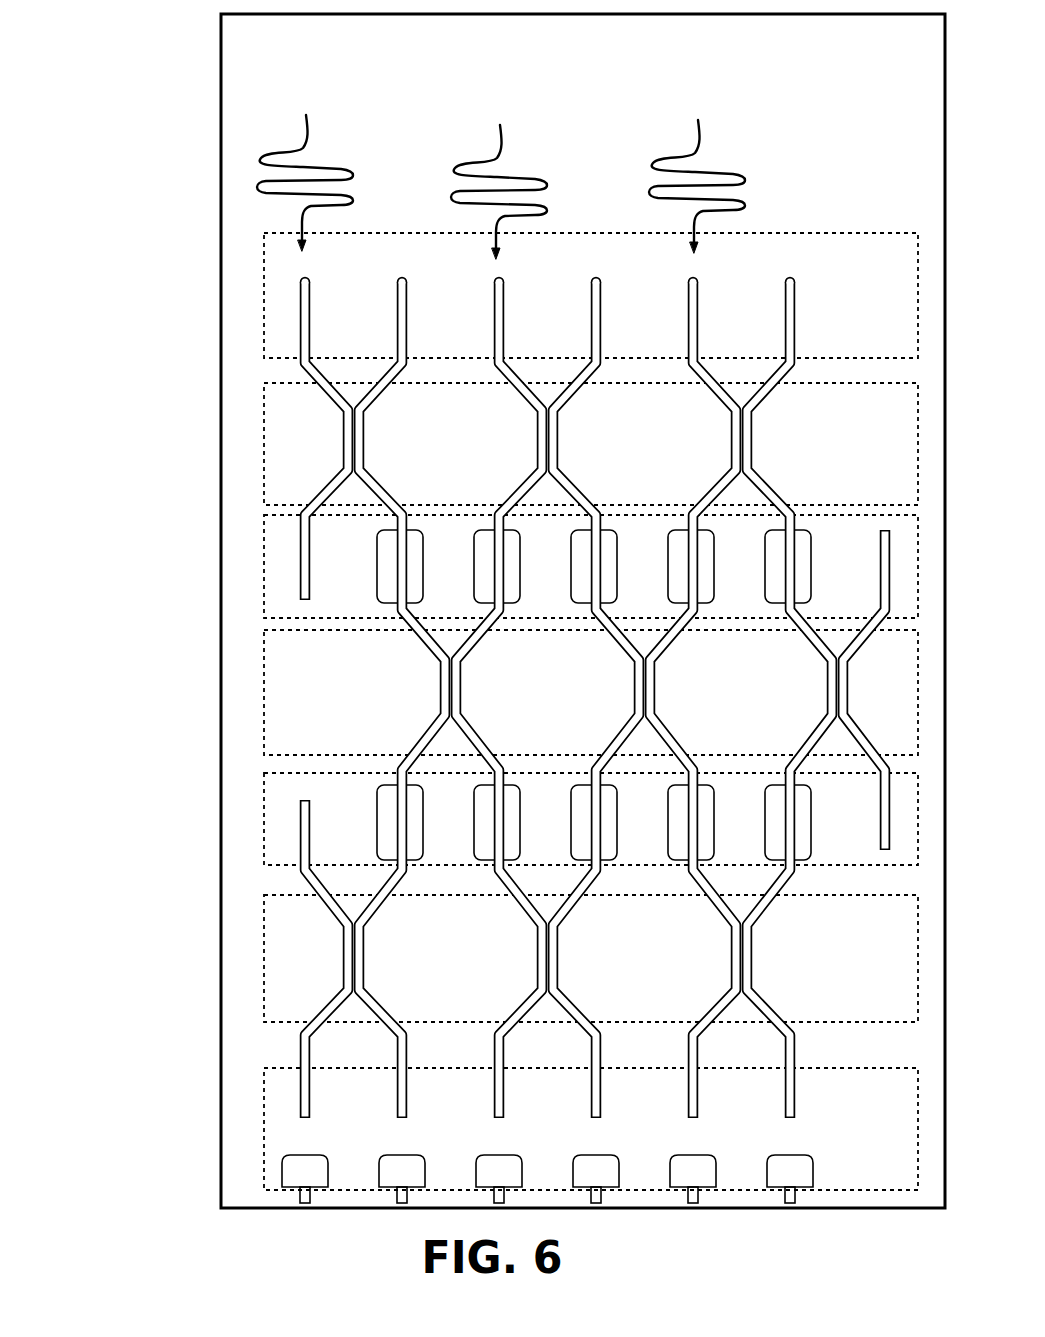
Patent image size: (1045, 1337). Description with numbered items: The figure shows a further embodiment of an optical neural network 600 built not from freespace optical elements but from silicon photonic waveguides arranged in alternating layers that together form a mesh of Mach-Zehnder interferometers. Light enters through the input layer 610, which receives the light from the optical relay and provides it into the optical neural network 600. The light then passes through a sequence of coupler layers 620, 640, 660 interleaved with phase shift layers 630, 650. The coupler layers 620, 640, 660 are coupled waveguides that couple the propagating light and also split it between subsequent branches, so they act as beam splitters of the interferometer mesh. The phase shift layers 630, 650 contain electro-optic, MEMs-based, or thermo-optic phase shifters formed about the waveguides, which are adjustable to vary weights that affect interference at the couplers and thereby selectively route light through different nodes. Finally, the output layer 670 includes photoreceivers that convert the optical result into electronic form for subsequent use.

The optical neural network 600 is at (602, 83).
The input layer 610 is at (264, 295).
The coupler layer 620 is at (264, 450).
The phase shift layer 630 is at (264, 567).
The coupler layer 640 is at (264, 697).
The phase shift layer 650 is at (264, 820).
The coupler layer 660 is at (264, 958).
The output layer 670 is at (264, 1132).